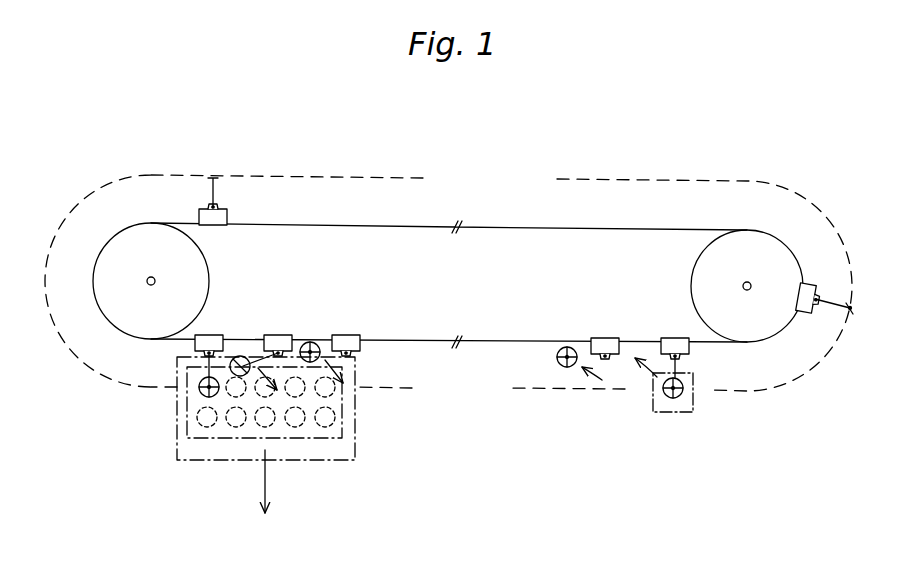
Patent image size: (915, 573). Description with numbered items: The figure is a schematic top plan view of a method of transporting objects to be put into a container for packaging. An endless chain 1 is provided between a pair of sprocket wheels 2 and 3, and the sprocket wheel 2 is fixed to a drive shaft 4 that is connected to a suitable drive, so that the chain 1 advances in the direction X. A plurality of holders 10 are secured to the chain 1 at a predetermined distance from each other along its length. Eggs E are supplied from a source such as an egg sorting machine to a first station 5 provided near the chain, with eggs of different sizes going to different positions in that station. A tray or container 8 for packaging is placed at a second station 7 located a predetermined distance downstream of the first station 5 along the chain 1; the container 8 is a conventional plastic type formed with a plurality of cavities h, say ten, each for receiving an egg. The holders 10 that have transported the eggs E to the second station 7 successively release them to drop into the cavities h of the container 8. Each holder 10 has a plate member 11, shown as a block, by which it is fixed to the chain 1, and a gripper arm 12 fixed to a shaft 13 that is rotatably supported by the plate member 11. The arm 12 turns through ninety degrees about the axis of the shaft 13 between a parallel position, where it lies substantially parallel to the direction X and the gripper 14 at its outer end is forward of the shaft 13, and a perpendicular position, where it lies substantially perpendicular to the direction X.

The endless chain 1 is at (590, 228).
The sprocket wheel 2 is at (132, 233).
The sprocket wheel 3 is at (772, 238).
The drive shaft 4 is at (153, 276).
The first station 5 is at (685, 412).
The second station 7 is at (177, 408).
The tray or container 8 is at (343, 405).
The holder 10 is at (838, 287).
The plate member 11 is at (677, 343).
The gripper arm 12 is at (842, 302).
The shaft 13 is at (357, 358).
The gripper 14 is at (852, 311).
The egg E is at (240, 356).
The cavity h is at (256, 422).
The direction X is at (473, 203).